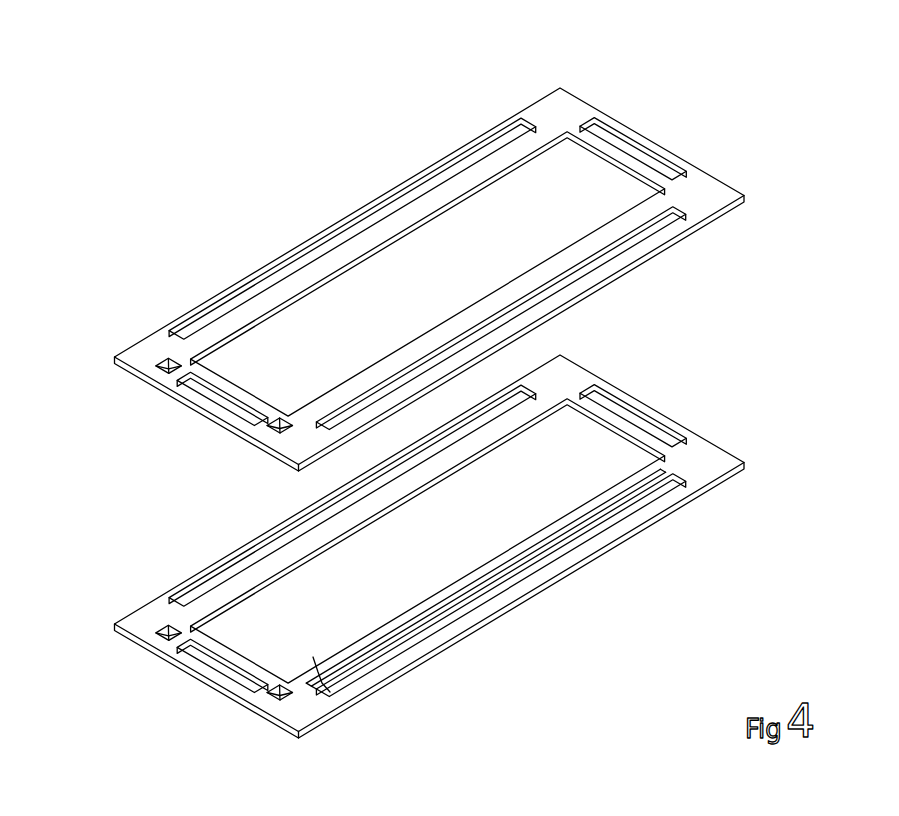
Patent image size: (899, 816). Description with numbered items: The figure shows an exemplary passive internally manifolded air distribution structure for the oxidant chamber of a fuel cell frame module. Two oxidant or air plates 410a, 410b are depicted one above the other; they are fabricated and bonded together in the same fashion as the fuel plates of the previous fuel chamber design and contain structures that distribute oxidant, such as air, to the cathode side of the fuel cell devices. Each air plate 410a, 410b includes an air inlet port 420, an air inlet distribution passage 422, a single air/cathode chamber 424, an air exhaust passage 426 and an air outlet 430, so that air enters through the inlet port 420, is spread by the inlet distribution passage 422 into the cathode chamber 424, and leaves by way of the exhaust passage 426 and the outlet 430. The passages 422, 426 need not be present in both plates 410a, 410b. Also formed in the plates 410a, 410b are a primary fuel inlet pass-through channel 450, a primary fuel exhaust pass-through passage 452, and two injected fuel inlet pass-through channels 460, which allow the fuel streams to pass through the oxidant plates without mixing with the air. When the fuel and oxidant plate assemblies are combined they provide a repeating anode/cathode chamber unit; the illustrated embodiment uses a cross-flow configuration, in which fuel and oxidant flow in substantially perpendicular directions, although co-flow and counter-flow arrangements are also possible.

The oxidant plate 410a is at (430, 252).
The oxidant plate 410b is at (439, 571).
The air inlet port 420 is at (627, 247).
The air inlet distribution passage 422 is at (488, 580).
The air/cathode chamber 424 is at (328, 691).
The air exhaust passage 426 is at (217, 607).
The air outlet 430 is at (372, 220).
The primary fuel inlet pass-through channel 450 is at (225, 677).
The primary fuel exhaust pass-through passage 452 is at (643, 422).
The injected fuel inlet pass-through channel 460 is at (155, 652).